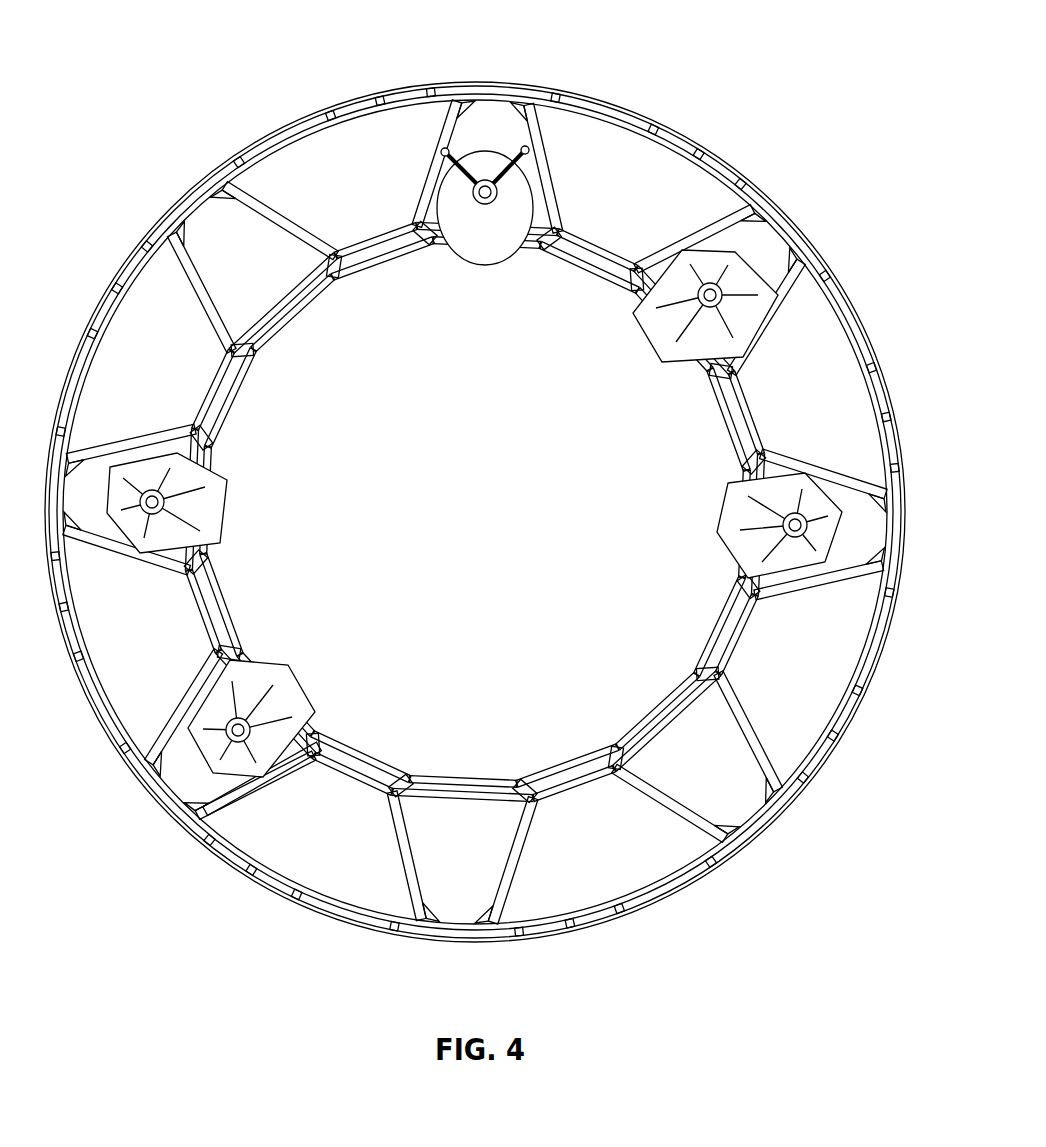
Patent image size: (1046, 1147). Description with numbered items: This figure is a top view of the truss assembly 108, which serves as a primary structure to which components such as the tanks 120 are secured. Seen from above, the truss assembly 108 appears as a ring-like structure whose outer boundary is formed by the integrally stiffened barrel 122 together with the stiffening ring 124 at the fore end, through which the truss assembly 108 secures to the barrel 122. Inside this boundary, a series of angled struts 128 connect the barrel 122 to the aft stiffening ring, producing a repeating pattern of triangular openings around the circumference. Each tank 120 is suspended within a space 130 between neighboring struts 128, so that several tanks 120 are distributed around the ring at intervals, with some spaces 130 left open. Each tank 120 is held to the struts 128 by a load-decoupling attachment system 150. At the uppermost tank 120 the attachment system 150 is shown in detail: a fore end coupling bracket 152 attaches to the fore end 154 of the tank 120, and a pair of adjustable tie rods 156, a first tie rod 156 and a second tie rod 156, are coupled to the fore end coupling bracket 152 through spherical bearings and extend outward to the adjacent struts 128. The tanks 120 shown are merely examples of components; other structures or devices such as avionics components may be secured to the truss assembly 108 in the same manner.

The truss assembly 108 is at (494, 485).
The tank 120 is at (474, 403).
The integrally stiffened barrel 122 is at (853, 335).
The stiffening ring 124 is at (837, 280).
The angled strut 128 is at (283, 210).
The space 130 is at (193, 782).
The load-decoupling attachment system 150 is at (479, 184).
The fore end coupling bracket 152 is at (487, 202).
The fore end 154 is at (470, 203).
The adjustable tie rod 156 is at (457, 178).